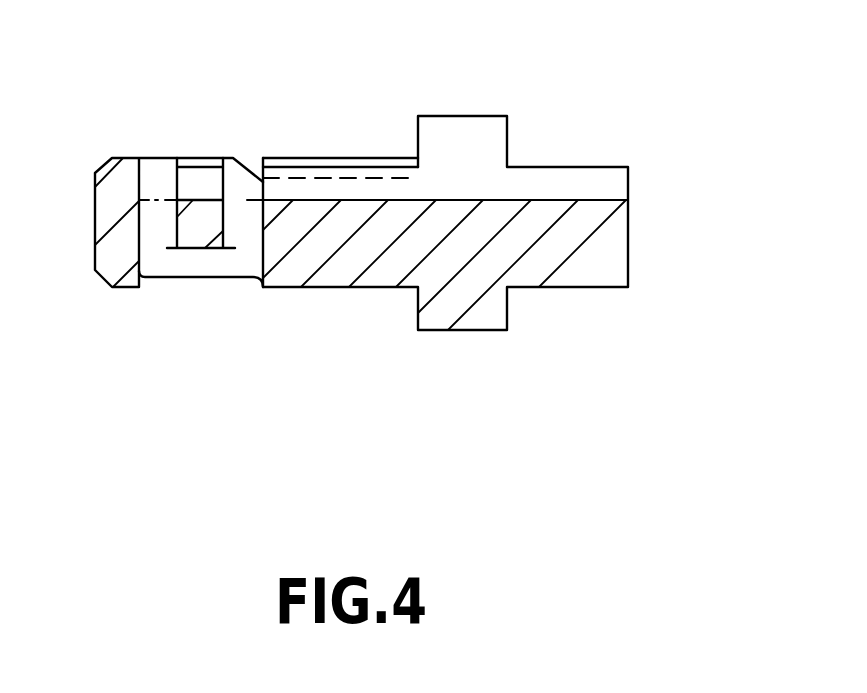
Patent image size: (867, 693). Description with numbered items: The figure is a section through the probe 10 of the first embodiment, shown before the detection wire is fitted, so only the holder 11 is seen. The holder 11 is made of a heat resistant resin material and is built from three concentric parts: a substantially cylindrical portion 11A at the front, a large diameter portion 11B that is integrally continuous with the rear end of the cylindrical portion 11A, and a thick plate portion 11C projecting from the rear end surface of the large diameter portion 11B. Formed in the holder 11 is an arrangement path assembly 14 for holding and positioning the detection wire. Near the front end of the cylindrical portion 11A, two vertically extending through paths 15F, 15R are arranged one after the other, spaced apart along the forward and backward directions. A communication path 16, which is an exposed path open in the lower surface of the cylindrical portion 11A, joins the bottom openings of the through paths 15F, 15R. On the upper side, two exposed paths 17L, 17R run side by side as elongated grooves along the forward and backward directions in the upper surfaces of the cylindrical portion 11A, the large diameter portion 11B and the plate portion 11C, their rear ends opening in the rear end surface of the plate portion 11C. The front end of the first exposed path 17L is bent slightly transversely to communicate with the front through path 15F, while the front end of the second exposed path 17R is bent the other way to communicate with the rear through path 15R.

The probe 10 is at (609, 122).
The holder 11 is at (627, 485).
The cylindrical portion 11A is at (365, 250).
The large diameter portion 11B is at (463, 307).
The thick plate portion 11C is at (582, 255).
The arrangement path assembly 14 is at (345, 135).
The front through path 15F is at (140, 212).
The rear through path 15R is at (260, 243).
The communication path 16 is at (192, 263).
The first exposed path 17L is at (308, 200).
The second exposed path 17R is at (383, 190).